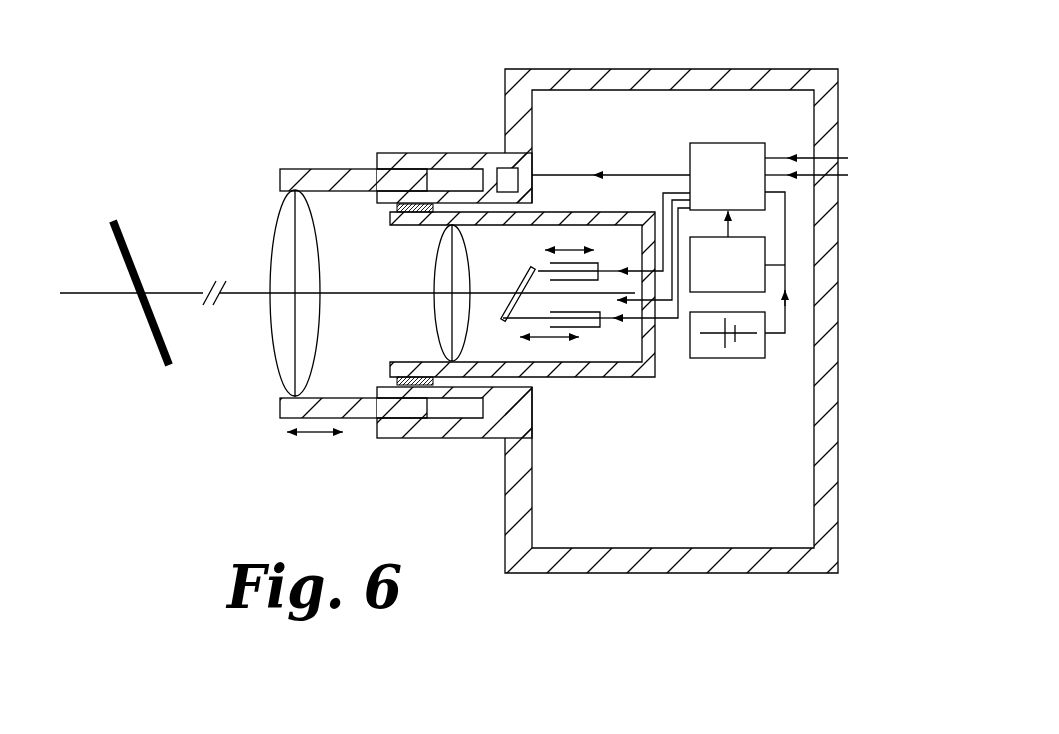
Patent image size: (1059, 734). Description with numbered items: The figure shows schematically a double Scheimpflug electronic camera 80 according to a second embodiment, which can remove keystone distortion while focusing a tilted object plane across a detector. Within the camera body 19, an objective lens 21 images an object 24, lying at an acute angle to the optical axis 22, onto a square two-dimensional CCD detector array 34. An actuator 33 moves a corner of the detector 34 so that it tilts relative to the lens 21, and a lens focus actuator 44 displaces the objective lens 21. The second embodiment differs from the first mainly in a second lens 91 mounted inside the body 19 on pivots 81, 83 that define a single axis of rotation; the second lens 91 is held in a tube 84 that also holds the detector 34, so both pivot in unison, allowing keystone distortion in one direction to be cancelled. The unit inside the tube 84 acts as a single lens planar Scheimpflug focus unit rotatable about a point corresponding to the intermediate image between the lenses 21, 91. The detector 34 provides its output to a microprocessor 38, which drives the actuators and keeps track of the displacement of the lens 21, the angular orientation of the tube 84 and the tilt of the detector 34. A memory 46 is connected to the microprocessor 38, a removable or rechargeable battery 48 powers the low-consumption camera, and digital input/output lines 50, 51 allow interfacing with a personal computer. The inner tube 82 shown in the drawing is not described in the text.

The body 19 is at (650, 69).
The double Scheimpflug electronic camera 80 is at (475, 127).
The lens focus actuator 44 is at (510, 158).
The microprocessor 38 is at (752, 143).
The digital input/output line 51 is at (848, 158).
The digital input/output line 50 is at (848, 175).
The memory 46 is at (765, 247).
The battery 48 is at (765, 343).
The lens 21 is at (285, 200).
The object 24 is at (128, 240).
The optical axis 22 is at (87, 293).
The pivot 81 is at (396, 203).
The pivot 83 is at (412, 362).
The second lens 91 is at (438, 250).
The inner tube 82 is at (483, 293).
The tube 84 is at (643, 378).
The detector array 34 is at (505, 315).
The actuator 33 is at (590, 328).